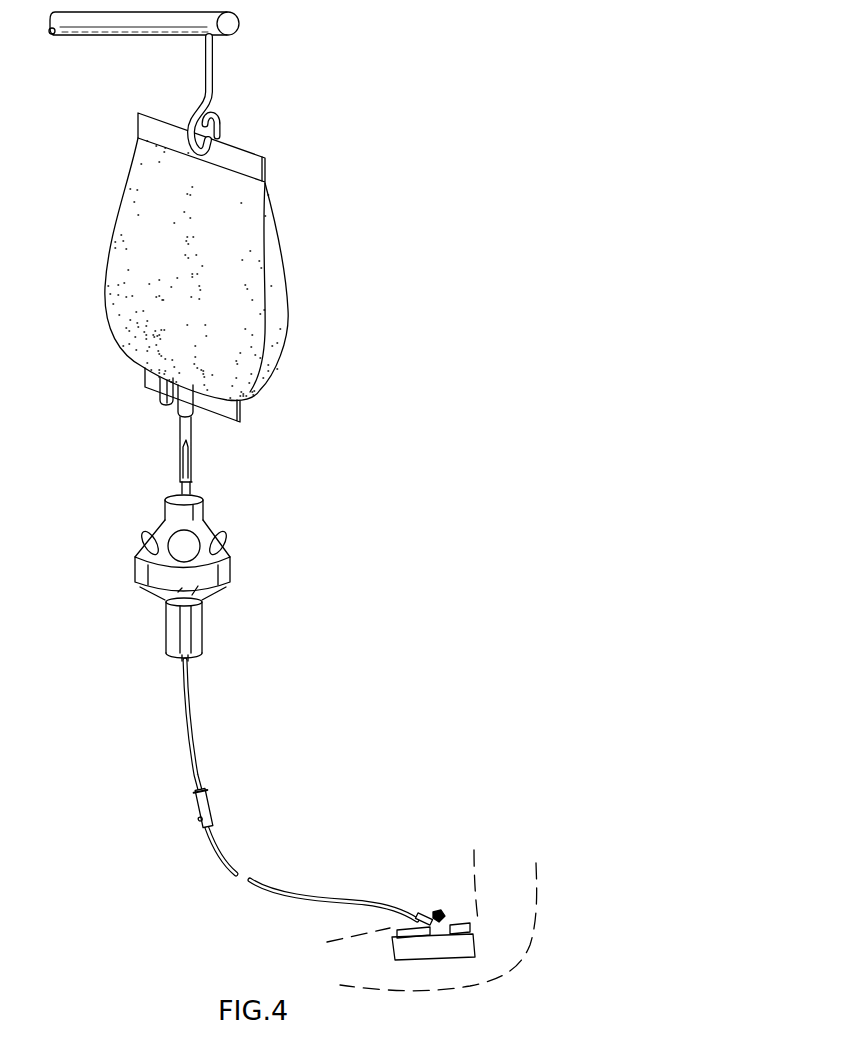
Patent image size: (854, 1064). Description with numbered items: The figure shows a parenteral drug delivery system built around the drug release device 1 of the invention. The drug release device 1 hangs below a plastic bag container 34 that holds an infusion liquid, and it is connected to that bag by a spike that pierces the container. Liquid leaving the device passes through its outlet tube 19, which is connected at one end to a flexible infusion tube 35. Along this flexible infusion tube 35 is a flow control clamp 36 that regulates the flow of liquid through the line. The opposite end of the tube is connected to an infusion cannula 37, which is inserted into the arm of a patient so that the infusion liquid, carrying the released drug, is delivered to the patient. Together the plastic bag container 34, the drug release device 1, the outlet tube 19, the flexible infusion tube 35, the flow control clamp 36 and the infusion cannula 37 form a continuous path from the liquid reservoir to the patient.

The drug release device 1 is at (232, 563).
The outlet tube 19 is at (188, 658).
The plastic bag container 34 is at (278, 268).
The flexible infusion tube 35 is at (193, 740).
The flow control clamp 36 is at (212, 808).
The infusion cannula 37 is at (462, 900).